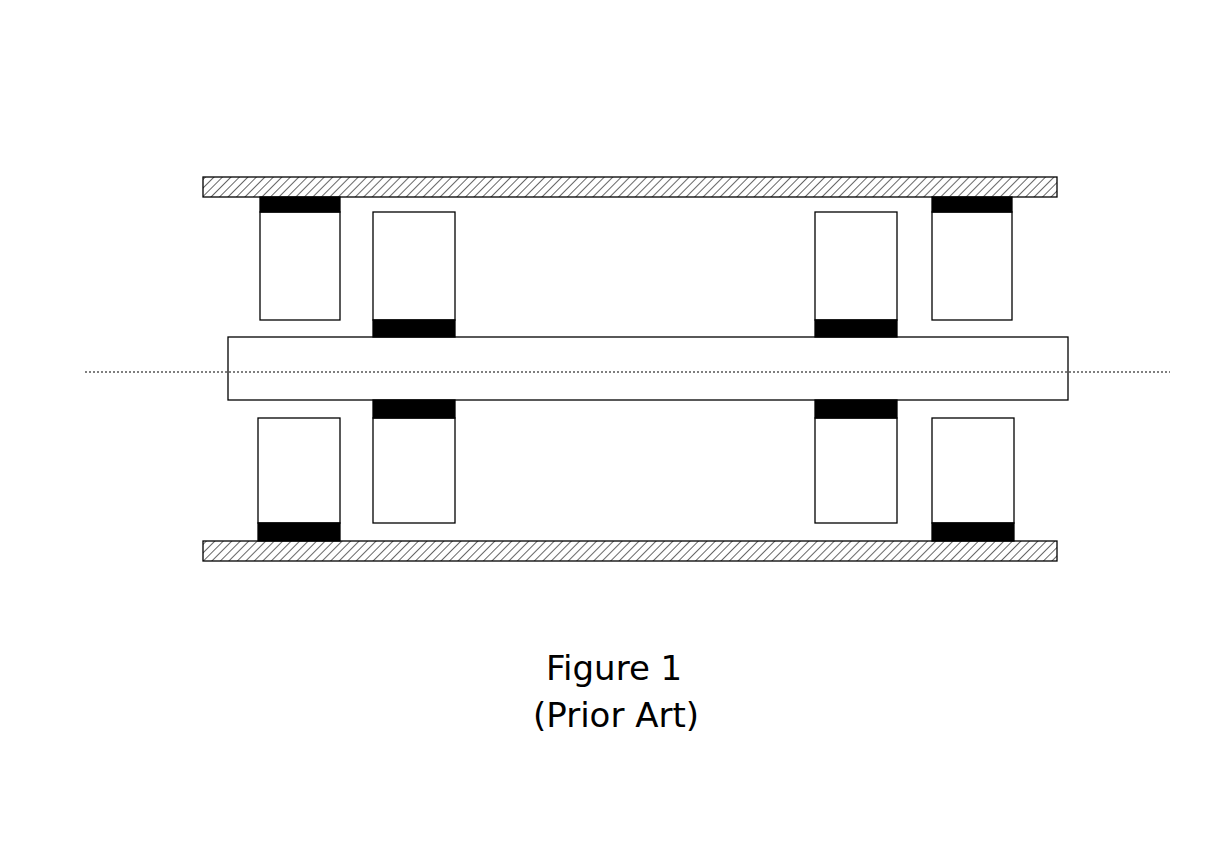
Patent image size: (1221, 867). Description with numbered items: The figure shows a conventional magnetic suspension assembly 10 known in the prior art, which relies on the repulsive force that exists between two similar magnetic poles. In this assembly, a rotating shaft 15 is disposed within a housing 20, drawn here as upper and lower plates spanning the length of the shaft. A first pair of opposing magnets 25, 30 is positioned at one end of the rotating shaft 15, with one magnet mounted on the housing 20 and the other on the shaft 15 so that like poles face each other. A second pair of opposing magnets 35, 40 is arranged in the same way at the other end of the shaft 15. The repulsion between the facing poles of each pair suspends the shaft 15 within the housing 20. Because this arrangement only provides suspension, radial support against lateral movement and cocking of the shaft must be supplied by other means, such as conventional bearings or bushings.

The magnetic suspension assembly 10 is at (651, 306).
The shaft 15 is at (1035, 390).
The housing 20 is at (630, 177).
The first opposing magnet 25 is at (997, 233).
The first opposing magnet 30 is at (860, 243).
The second opposing magnet 35 is at (407, 243).
The second opposing magnet 40 is at (281, 225).